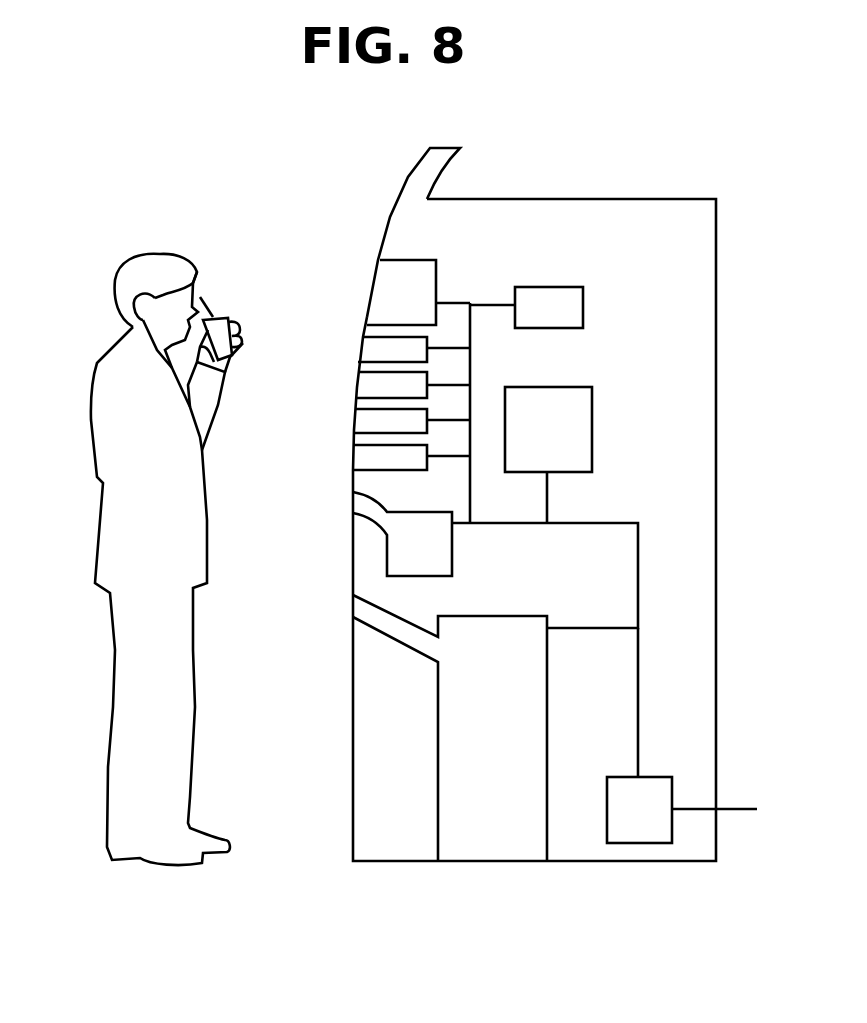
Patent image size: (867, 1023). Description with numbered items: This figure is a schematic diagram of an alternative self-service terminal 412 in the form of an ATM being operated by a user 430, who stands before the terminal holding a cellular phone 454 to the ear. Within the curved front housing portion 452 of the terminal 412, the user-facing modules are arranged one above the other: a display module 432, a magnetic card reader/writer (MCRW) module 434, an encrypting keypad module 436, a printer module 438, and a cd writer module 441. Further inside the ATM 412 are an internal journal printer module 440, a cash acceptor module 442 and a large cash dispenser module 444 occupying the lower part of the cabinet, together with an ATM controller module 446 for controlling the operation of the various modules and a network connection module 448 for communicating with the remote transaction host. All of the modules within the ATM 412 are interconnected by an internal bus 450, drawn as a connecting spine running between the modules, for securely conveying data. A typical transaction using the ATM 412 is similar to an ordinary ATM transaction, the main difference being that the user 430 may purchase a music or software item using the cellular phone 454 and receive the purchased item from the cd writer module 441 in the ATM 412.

The self-service terminal 412 is at (717, 608).
The user 430 is at (149, 540).
The display module 432 is at (373, 278).
The magnetic card reader/writer module 434 is at (365, 343).
The encrypting keypad module 436 is at (357, 385).
The printer module 438 is at (353, 420).
The internal journal printer module 440 is at (555, 287).
The cd writer module 441 is at (352, 456).
The cash acceptor module 442 is at (395, 560).
The cash dispenser module 444 is at (468, 735).
The ATM controller module 446 is at (525, 444).
The network connection module 448 is at (616, 828).
The internal bus 450 is at (618, 522).
The curved canopy 452 is at (407, 180).
The mobile phone 454 is at (213, 312).